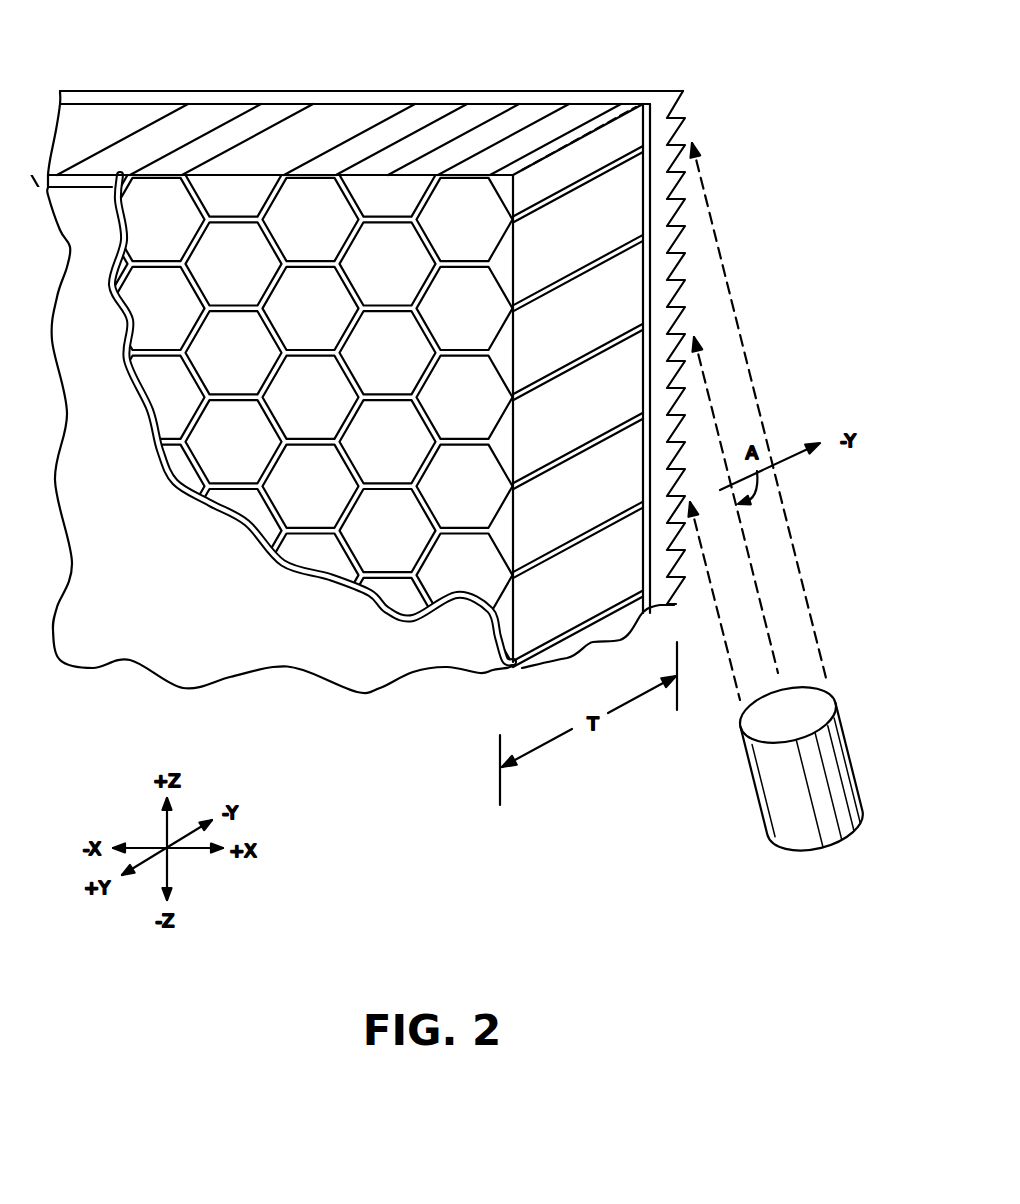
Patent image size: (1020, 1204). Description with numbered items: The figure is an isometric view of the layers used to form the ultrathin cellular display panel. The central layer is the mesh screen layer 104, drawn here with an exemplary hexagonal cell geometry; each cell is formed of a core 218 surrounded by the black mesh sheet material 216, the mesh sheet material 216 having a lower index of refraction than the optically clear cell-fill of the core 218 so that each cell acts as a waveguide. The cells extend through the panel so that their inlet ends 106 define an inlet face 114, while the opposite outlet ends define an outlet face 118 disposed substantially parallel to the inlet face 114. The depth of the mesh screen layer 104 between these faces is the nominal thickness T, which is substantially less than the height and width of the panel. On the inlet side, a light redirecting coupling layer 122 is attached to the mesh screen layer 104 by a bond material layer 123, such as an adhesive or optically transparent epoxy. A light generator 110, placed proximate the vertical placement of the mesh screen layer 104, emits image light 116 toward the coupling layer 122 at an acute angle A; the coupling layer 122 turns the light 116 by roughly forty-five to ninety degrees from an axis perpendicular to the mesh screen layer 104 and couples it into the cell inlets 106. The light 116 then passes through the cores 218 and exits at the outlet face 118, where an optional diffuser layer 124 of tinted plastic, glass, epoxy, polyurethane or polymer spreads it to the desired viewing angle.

The mesh screen layer 104 is at (457, 136).
The mesh screen cell inlet ends 106 is at (647, 207).
The light generator 110 is at (756, 780).
The inlet face 114 is at (690, 287).
The image light 116 is at (719, 426).
The outlet face 118 is at (253, 623).
The light redirecting coupling layer 122 is at (660, 101).
The bond material layer 123 is at (647, 130).
The diffuser layer 124 is at (507, 650).
The mesh sheet material 216 is at (188, 185).
The core 218 is at (235, 258).